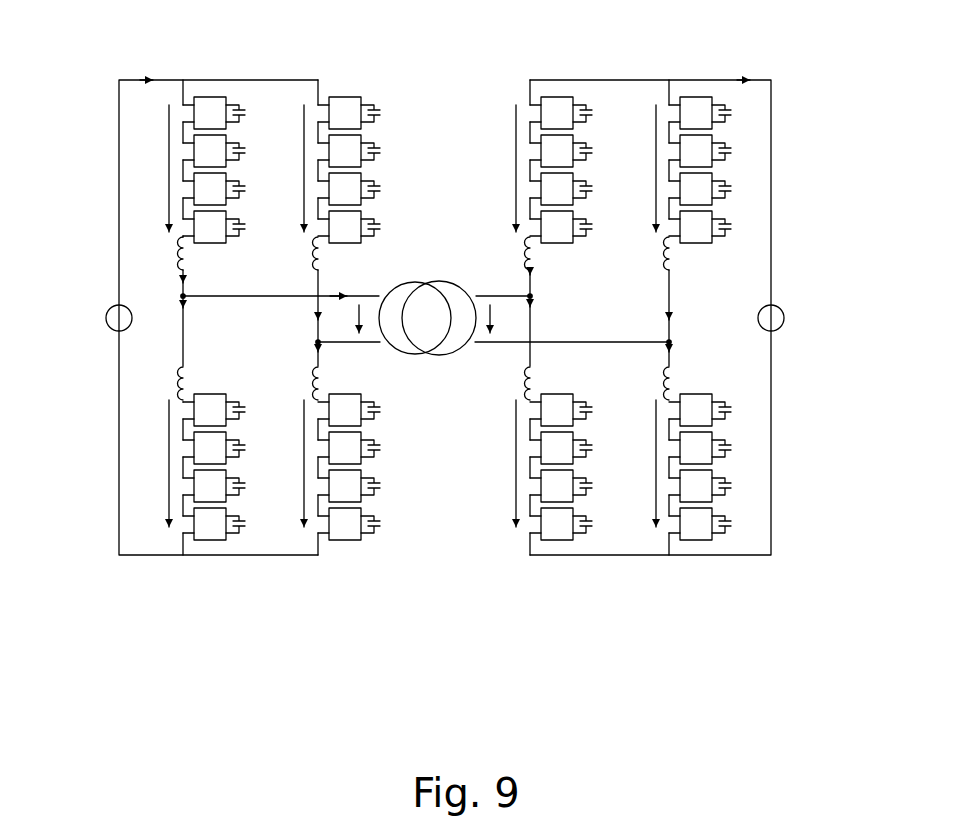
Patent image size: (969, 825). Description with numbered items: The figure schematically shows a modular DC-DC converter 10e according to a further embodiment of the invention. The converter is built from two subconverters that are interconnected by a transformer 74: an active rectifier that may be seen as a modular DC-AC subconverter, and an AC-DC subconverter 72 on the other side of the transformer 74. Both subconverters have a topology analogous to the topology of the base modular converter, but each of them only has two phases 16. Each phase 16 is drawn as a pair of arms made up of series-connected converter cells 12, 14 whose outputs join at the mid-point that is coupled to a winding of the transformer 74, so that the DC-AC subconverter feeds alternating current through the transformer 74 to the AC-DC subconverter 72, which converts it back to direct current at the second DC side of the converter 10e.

The converter 10e is at (464, 321).
The AC-DC subconverter 72 is at (444, 321).
The converter cell 12 is at (540, 112).
The converter cell 14 is at (496, 321).
The phase 16 is at (480, 321).
The transformer 74 is at (434, 357).